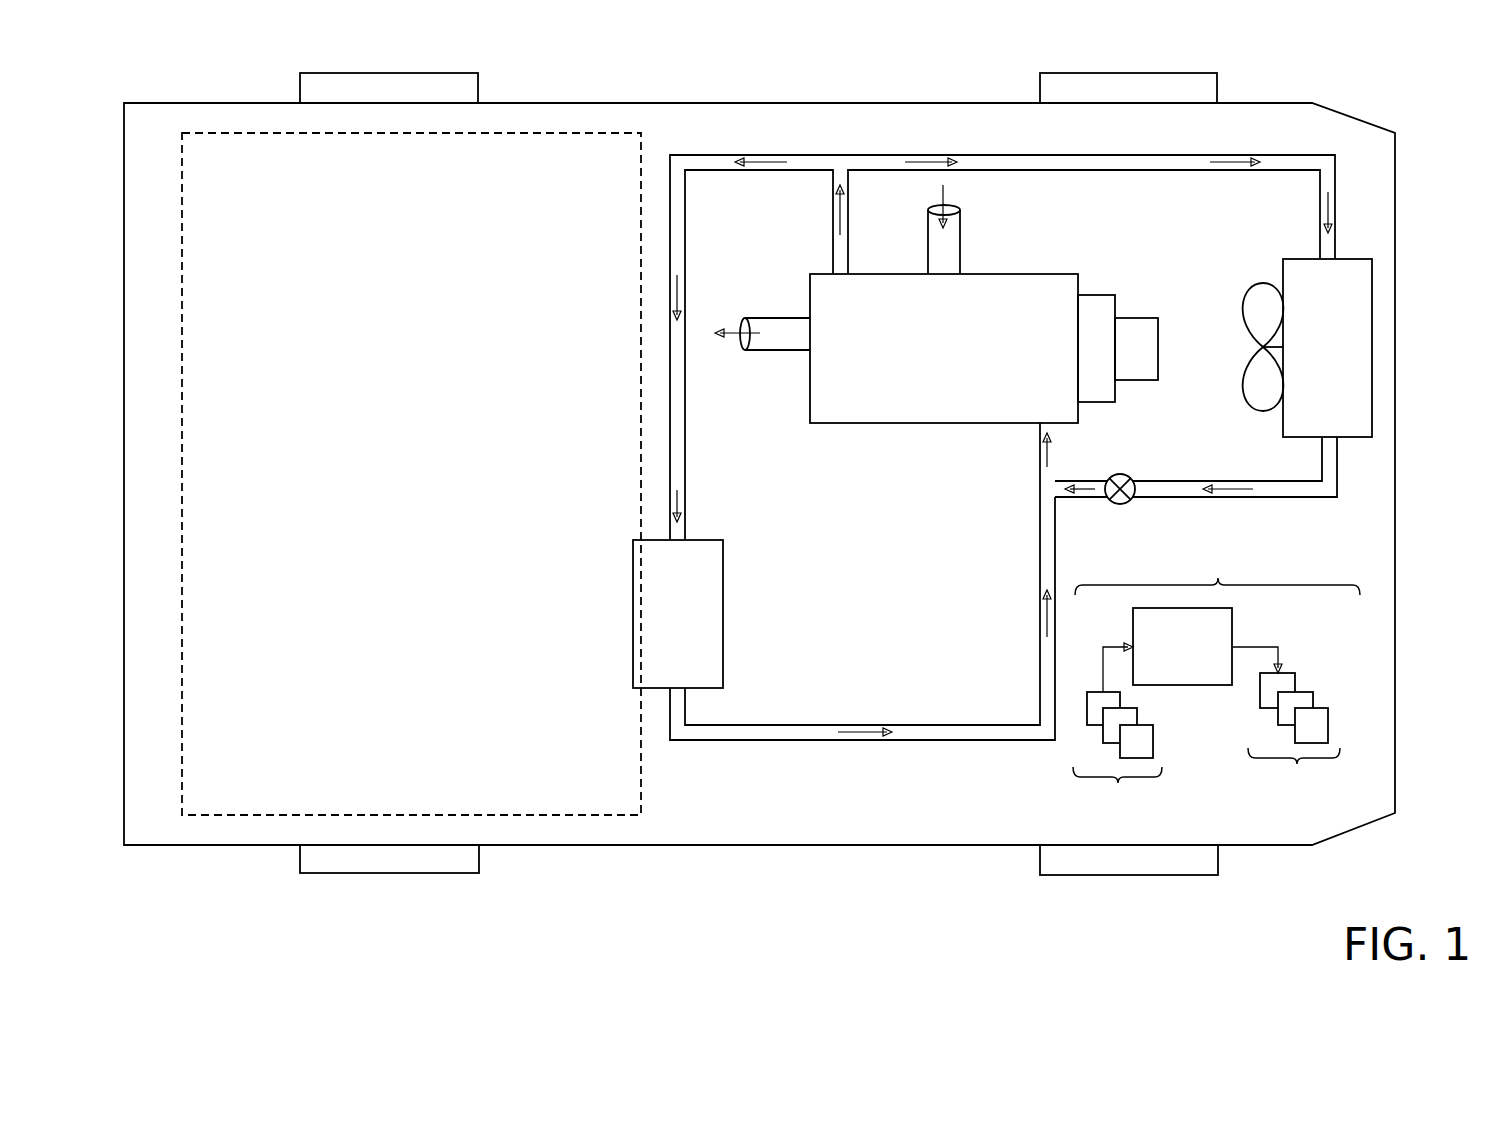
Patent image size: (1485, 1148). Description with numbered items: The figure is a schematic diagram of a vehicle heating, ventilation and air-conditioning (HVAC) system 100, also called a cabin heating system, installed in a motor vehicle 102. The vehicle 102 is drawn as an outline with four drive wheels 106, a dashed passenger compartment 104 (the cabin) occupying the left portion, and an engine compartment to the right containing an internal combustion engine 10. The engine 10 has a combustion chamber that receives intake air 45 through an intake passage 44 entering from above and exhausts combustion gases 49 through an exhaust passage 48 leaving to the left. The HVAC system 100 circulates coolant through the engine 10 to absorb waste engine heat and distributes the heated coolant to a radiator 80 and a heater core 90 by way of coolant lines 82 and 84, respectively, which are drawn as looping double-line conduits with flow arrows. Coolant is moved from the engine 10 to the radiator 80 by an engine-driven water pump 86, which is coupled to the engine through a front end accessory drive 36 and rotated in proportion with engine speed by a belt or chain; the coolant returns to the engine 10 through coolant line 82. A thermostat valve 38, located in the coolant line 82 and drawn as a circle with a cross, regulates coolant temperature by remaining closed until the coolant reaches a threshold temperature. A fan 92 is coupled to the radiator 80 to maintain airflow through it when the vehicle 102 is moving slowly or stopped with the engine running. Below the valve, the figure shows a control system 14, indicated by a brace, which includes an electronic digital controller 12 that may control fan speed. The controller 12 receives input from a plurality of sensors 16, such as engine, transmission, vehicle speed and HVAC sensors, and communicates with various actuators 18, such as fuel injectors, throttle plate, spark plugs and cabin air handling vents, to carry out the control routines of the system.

The internal combustion engine 10 is at (996, 359).
The controller 12 is at (1169, 658).
The control system 14 is at (1217, 560).
The sensors 16 is at (1118, 739).
The actuators 18 is at (1296, 731).
The front end accessory drive 36 is at (1094, 294).
The thermostat valve 38 is at (1128, 475).
The intake passage 44 is at (961, 248).
The intake air 45 is at (946, 190).
The exhaust passage 48 is at (784, 352).
The combustion gases 49 is at (728, 348).
The radiator 80 is at (1314, 361).
The coolant line 82 is at (1130, 155).
The coolant line 84 is at (760, 155).
The engine-driven water pump 86 is at (1124, 361).
The heater core 90 is at (663, 626).
The fan 92 is at (1249, 305).
The HVAC system 100 is at (1350, 196).
The motor vehicle 102 is at (690, 103).
The passenger compartment 104 is at (328, 519).
The drive wheels 106 is at (390, 73).